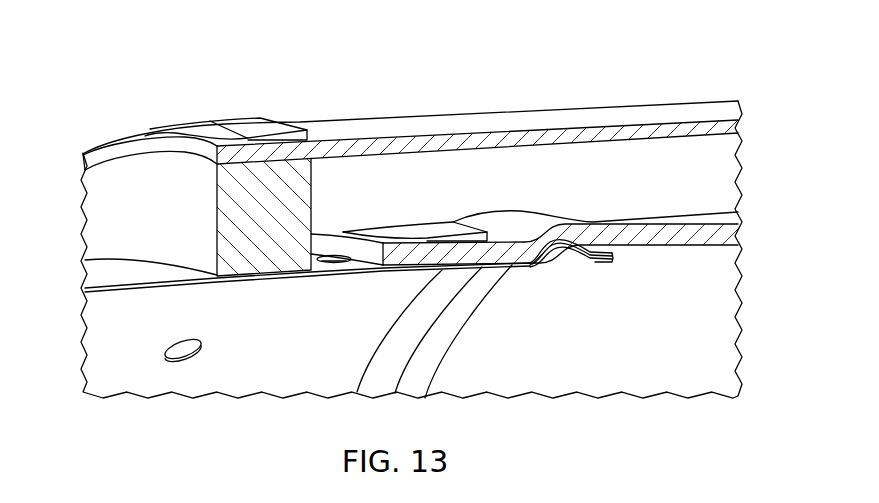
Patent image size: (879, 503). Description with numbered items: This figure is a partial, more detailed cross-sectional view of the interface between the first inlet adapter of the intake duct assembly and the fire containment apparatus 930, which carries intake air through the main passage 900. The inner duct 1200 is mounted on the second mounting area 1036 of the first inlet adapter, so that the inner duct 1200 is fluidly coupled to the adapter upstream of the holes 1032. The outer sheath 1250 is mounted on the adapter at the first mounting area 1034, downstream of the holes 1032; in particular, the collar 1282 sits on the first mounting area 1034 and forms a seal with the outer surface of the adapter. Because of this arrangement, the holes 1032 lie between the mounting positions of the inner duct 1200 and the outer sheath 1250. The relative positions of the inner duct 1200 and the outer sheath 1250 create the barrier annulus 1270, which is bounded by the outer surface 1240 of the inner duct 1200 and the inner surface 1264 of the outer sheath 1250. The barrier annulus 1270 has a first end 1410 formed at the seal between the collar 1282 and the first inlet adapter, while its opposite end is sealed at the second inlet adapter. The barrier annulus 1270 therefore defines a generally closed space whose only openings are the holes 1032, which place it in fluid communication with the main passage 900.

The main passage 900 is at (723, 317).
The fire containment apparatus 930 is at (447, 112).
The collar 1282 is at (103, 207).
The outer sheath 1250 is at (560, 118).
The inner surface of the outer sheath 1264 is at (722, 128).
The barrier annulus 1270 is at (647, 158).
The first end of the barrier annulus 1410 is at (333, 170).
The outer surface of the inner duct 1240 is at (717, 215).
The inner duct 1200 is at (640, 242).
The first mounting area 1034 is at (255, 277).
The holes 1032 is at (336, 263).
The second mounting area 1036 is at (493, 271).